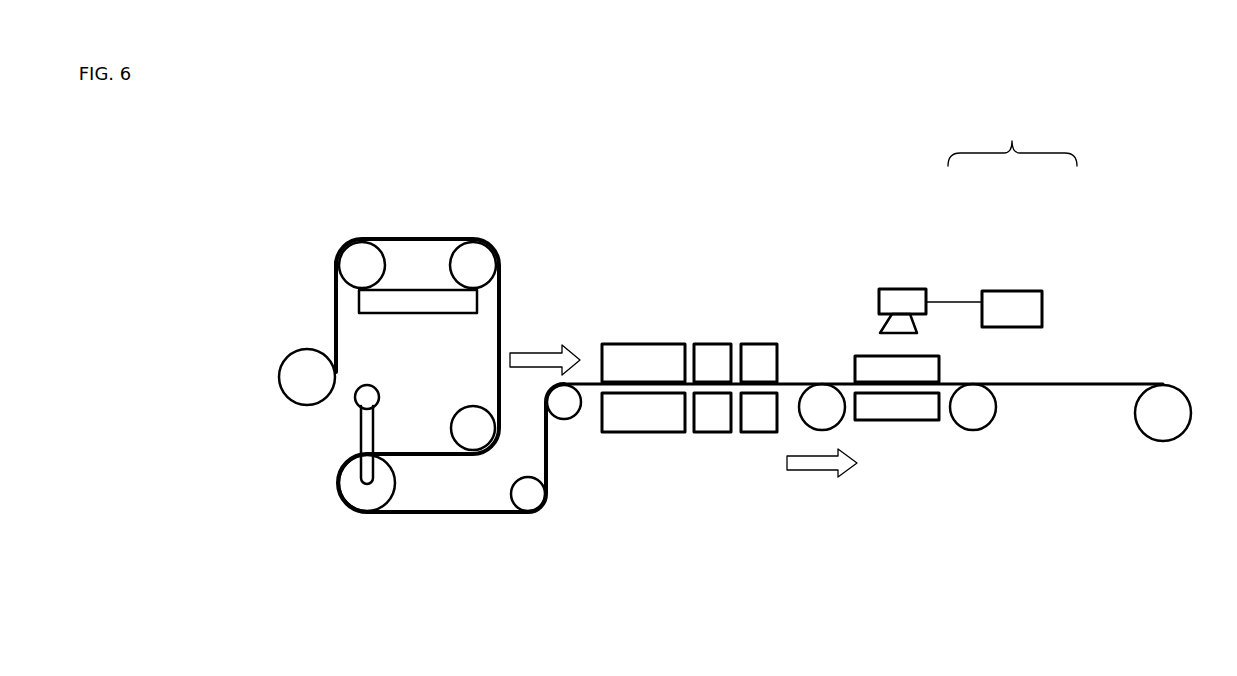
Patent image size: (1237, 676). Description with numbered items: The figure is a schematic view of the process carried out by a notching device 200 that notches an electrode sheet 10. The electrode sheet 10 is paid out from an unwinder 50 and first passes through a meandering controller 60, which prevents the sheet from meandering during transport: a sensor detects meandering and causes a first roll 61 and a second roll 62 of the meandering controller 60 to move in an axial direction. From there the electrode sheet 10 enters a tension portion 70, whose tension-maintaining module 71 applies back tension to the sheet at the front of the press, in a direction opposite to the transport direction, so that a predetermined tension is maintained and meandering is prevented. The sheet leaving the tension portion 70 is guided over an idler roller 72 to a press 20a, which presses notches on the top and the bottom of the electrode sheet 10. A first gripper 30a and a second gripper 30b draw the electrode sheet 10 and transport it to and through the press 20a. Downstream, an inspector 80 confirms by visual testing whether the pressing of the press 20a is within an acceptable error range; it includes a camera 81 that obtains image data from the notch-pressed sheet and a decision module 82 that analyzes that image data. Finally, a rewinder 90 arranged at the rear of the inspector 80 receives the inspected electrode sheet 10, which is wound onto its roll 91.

The notching device 200 is at (252, 161).
The electrode sheet 10 is at (336, 310).
The unwinder 50 is at (277, 390).
The meandering controller 60 is at (439, 220).
The first roll 61 is at (360, 265).
The second roll 62 is at (475, 265).
The tension portion 70 is at (471, 387).
The tension-maintaining module 71 is at (358, 440).
The idler roller 72 is at (567, 408).
The press 20a is at (634, 343).
The first gripper 30a is at (714, 433).
The second gripper 30b is at (759, 343).
The inspector 80 is at (979, 219).
The camera 81 is at (899, 284).
The decision module 82 is at (1013, 284).
The rewinder 90 is at (1182, 412).
The roll 91 is at (1173, 420).